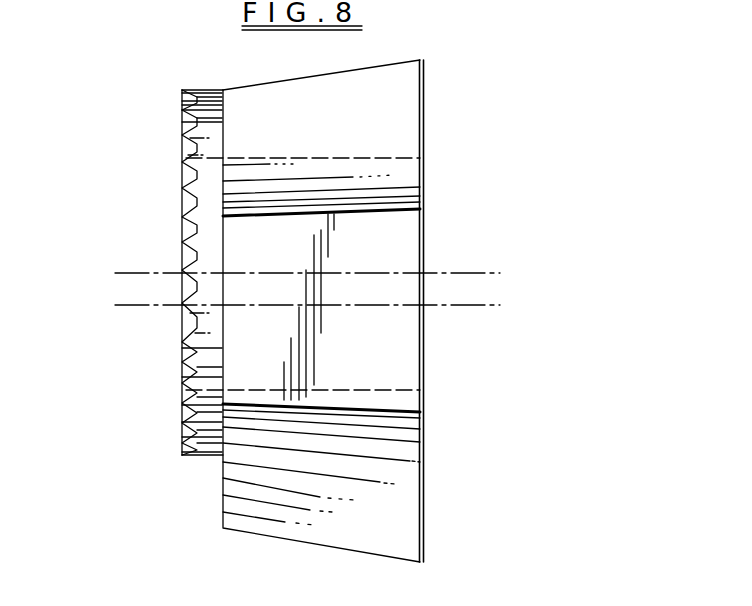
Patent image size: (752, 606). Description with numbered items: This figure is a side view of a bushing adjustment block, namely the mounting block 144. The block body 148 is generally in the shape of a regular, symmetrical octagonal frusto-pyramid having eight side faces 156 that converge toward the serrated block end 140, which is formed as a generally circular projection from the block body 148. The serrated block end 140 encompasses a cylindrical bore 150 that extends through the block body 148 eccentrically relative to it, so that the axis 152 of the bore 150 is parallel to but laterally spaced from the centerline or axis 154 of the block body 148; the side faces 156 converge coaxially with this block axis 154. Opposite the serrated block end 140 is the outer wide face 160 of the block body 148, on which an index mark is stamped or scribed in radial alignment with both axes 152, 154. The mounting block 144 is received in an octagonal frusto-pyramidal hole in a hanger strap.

The splined shaft 140 is at (183, 139).
The housing body 144 is at (457, 142).
The top surface 148 is at (318, 75).
The upper bore line 150 is at (387, 160).
The upper centerline 152 is at (470, 273).
The lower centerline 154 is at (478, 307).
The bore wall 156 is at (423, 198).
The end face 160 is at (425, 544).